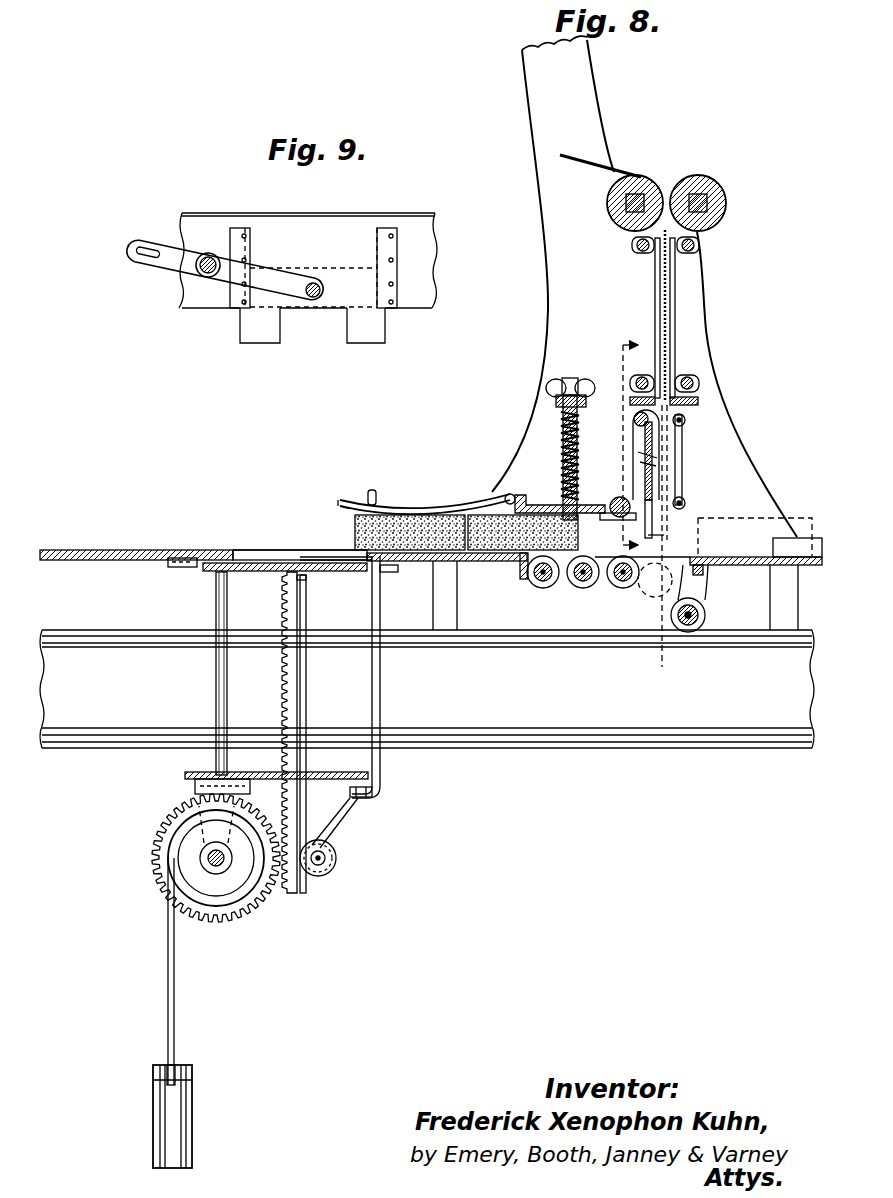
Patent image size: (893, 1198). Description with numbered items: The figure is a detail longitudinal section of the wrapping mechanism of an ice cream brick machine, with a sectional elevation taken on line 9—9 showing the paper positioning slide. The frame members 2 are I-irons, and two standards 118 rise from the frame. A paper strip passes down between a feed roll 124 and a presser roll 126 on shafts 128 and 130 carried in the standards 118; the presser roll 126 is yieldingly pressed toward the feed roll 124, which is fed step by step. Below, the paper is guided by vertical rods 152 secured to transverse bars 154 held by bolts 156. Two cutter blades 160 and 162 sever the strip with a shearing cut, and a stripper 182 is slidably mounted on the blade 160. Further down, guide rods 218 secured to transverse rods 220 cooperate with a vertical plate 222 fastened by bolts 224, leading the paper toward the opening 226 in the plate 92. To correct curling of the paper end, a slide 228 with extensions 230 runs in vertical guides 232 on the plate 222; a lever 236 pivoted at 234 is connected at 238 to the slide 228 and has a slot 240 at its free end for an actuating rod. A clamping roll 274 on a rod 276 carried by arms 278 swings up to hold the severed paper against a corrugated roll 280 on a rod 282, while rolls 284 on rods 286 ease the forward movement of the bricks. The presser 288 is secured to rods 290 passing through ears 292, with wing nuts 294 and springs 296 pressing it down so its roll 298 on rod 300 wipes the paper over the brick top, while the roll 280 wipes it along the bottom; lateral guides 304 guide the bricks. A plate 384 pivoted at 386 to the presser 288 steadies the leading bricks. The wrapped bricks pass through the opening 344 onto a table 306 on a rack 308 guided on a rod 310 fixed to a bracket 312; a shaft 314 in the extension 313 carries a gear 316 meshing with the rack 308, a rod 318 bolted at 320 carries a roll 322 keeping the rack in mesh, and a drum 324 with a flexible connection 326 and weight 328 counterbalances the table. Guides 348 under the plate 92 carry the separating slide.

In FIG. 8, the frame members 2 is at (515, 748).
In FIG. 8, the section line 9— 9 is at (637, 440).
In FIG. 8, the plate 92 is at (122, 550).
In FIG. 8, the standards 118 is at (548, 298).
In FIG. 8, the feed roll 124 is at (612, 194).
In FIG. 8, the presser roll 126 is at (713, 191).
In FIG. 8, the feed roll shaft 128 is at (633, 203).
In FIG. 8, the presser roll shaft 130 is at (706, 205).
In FIG. 8, the vertical rods 152 is at (655, 300).
In FIG. 8, the transverse bars 154 is at (661, 256).
In FIG. 8, the bolts 156 is at (634, 245).
In FIG. 8, the cutter blade 160 is at (700, 404).
In FIG. 8, the cutter blade 162 is at (632, 418).
In FIG. 8, the stripper 182 is at (700, 398).
In FIG. 8, the guide rods 218 is at (683, 489).
In FIG. 8, the transverse rods 220 is at (686, 421).
In FIG. 8, the vertical plate 222 is at (670, 452).
In FIG. 9, the vertical plate 222 is at (306, 222).
In FIG. 8, the bolts 224 is at (645, 440).
In FIG. 8, the opening 226 is at (704, 571).
In FIG. 9, the slide 228 is at (336, 275).
In FIG. 8, the extensions 230 is at (672, 535).
In FIG. 9, the extensions 230 is at (245, 332).
In FIG. 9, the vertical guides 232 is at (243, 230).
In FIG. 9, the pivot 234 is at (208, 260).
In FIG. 8, the lever 236 is at (652, 465).
In FIG. 9, the lever 236 is at (170, 263).
In FIG. 9, the pivot 238 is at (313, 298).
In FIG. 9, the slot 240 is at (145, 245).
In FIG. 8, the roll 274 is at (705, 618).
In FIG. 8, the rod 276 is at (689, 620).
In FIG. 8, the arms 278 is at (706, 594).
In FIG. 8, the roll 280 is at (622, 588).
In FIG. 8, the rod 282 is at (650, 597).
In FIG. 8, the rolls 284 is at (583, 588).
In FIG. 8, the rods 286 is at (543, 588).
In FIG. 8, the presser 288 is at (543, 505).
In FIG. 8, the rods 290 is at (563, 421).
In FIG. 8, the ears 292 is at (556, 400).
In FIG. 8, the wing nuts 294 is at (552, 383).
In FIG. 8, the spring 296 is at (560, 445).
In FIG. 8, the roll 298 is at (616, 498).
In FIG. 8, the rod 300 is at (625, 514).
In FIG. 8, the lateral guides 304 is at (800, 538).
In FIG. 8, the table 306 is at (262, 572).
In FIG. 8, the rack 308 is at (282, 676).
In FIG. 8, the rod 310 is at (216, 690).
In FIG. 8, the bracket 312 is at (190, 772).
In FIG. 8, the extension 313 is at (195, 788).
In FIG. 8, the shaft 314 is at (222, 868).
In FIG. 8, the gear 316 is at (265, 910).
In FIG. 8, the rod 318 is at (372, 664).
In FIG. 8, the bolt connection 320 is at (374, 792).
In FIG. 8, the roll 322 is at (337, 857).
In FIG. 8, the drum 324 is at (212, 892).
In FIG. 8, the flexible connection 326 is at (168, 988).
In FIG. 8, the weight 328 is at (155, 1096).
In FIG. 8, the opening 344 is at (275, 550).
In FIG. 8, the guides 348 is at (180, 567).
In FIG. 8, the plate 384 is at (387, 502).
In FIG. 8, the pivot 386 is at (503, 494).